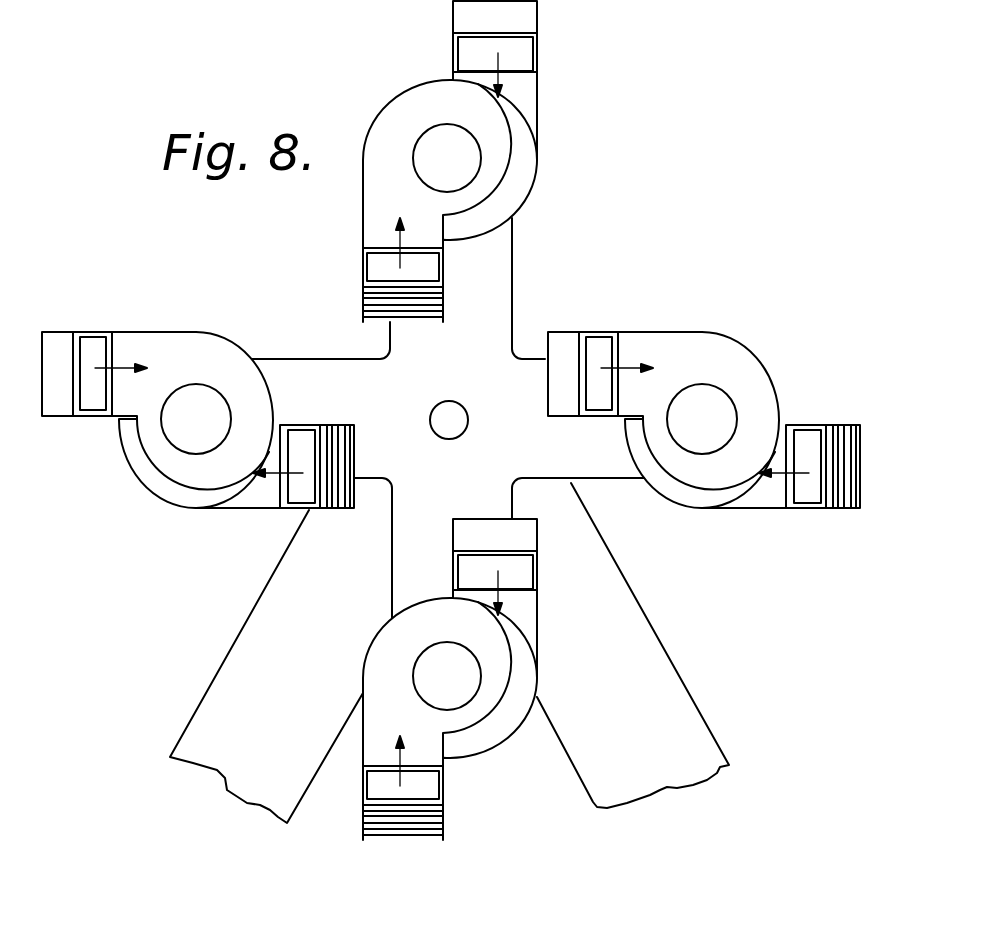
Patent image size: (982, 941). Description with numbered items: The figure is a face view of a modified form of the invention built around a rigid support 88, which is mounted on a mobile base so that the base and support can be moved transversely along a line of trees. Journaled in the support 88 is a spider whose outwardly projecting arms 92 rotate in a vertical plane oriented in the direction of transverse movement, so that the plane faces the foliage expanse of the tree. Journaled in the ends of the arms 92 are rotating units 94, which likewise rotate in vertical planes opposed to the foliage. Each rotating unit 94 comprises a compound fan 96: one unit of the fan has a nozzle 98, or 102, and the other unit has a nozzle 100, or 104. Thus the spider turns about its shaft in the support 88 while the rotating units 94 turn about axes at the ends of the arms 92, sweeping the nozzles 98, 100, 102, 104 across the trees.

The rigid support 88 is at (232, 708).
The arms 92 is at (498, 253).
The rotating units 94 is at (579, 151).
The compound fan 96 is at (340, 66).
The nozzle 98 is at (522, 55).
The nozzle 100 is at (370, 259).
The nozzle 102 is at (91, 340).
The nozzle 104 is at (296, 497).